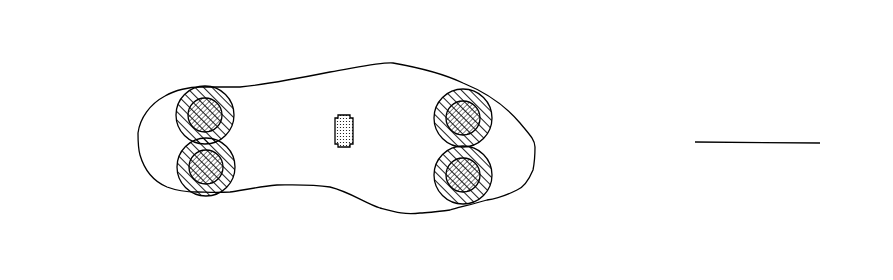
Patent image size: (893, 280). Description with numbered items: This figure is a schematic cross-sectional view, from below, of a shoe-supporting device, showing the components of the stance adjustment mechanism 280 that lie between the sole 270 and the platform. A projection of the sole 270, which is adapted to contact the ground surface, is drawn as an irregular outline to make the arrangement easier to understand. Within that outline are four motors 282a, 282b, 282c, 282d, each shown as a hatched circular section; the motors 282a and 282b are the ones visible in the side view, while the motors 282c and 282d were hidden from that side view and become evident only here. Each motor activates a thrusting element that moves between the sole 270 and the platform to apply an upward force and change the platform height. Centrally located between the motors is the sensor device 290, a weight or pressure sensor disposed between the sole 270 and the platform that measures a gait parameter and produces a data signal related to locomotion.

The sole 270 is at (268, 85).
The stance adjustment mechanism 280 is at (430, 123).
The motor 282a is at (185, 137).
The motor 282b is at (492, 102).
The motor 282c is at (177, 171).
The motor 282d is at (487, 160).
The sensor device 290 is at (357, 110).